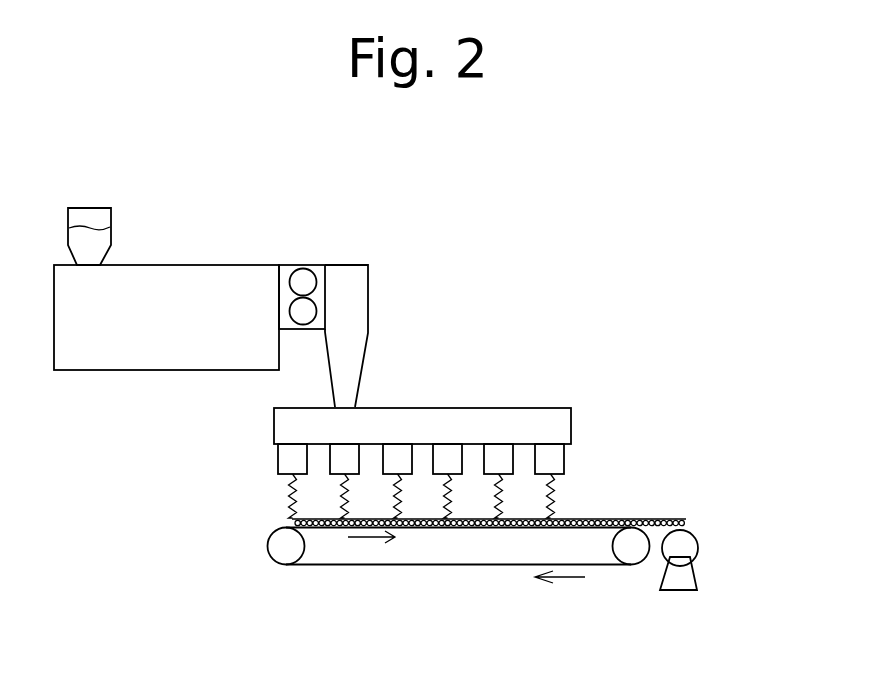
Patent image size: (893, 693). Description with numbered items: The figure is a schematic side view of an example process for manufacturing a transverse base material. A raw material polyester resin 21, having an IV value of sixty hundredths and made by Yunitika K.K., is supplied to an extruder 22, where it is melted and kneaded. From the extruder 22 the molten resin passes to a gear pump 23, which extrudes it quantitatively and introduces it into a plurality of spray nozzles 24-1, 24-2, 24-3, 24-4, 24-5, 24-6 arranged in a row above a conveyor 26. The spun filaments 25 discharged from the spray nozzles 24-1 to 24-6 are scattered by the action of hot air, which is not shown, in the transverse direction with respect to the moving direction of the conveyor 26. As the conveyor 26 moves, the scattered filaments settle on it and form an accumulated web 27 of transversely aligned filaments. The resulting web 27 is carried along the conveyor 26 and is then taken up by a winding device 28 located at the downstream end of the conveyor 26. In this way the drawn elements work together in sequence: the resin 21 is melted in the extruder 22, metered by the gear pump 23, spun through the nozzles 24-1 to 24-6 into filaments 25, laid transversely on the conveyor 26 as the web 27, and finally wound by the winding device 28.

The raw material polyester resin 21 is at (82, 233).
The extruder 22 is at (193, 290).
The gear pump 23 is at (304, 280).
The spray nozzle 24-1 is at (287, 458).
The spray nozzle 24-2 is at (345, 458).
The spray nozzle 24-3 is at (395, 457).
The spray nozzle 24-4 is at (450, 458).
The spray nozzle 24-5 is at (502, 458).
The spray nozzle 24-6 is at (550, 461).
The spun filaments 25 is at (292, 510).
The conveyor 26 is at (347, 563).
The accumulated web 27 is at (625, 520).
The winding device 28 is at (688, 550).